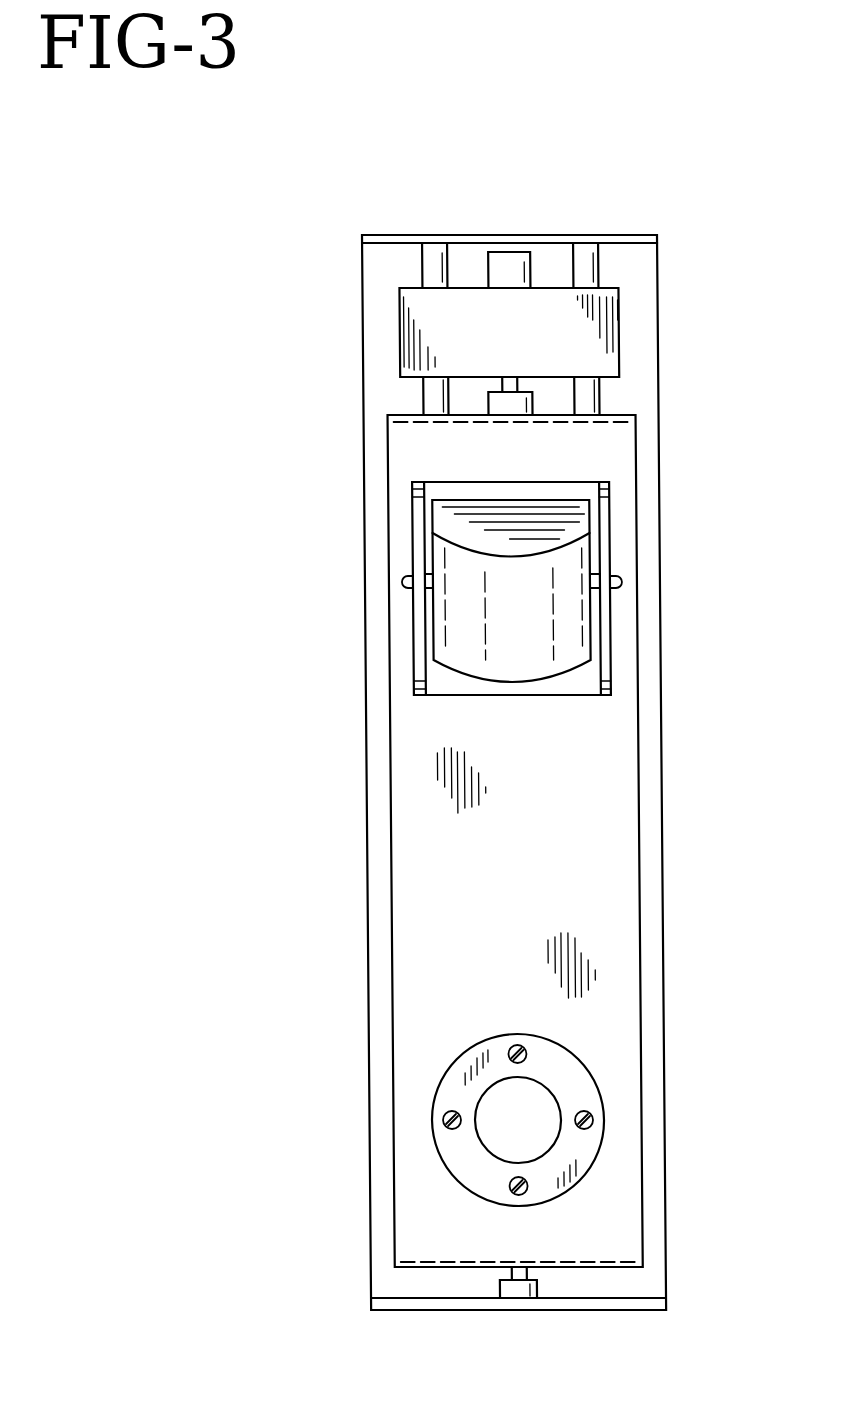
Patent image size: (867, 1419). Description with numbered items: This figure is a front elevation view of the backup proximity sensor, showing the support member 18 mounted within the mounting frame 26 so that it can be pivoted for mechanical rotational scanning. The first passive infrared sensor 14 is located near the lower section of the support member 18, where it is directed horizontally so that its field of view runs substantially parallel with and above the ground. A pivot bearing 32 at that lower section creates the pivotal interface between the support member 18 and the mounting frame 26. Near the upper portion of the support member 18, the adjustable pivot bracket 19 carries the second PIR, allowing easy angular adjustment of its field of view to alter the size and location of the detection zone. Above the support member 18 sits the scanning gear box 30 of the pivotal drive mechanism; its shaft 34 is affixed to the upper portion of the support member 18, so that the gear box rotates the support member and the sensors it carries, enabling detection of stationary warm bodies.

The first passive infrared sensor 14 is at (560, 1076).
The support member 18 is at (617, 468).
The adjustable pivot bracket 19 is at (405, 579).
The mounting frame 26 is at (668, 1300).
The scanning gear box 30 is at (582, 341).
The pivot bearing 32 is at (527, 1273).
The shaft 34 is at (515, 383).